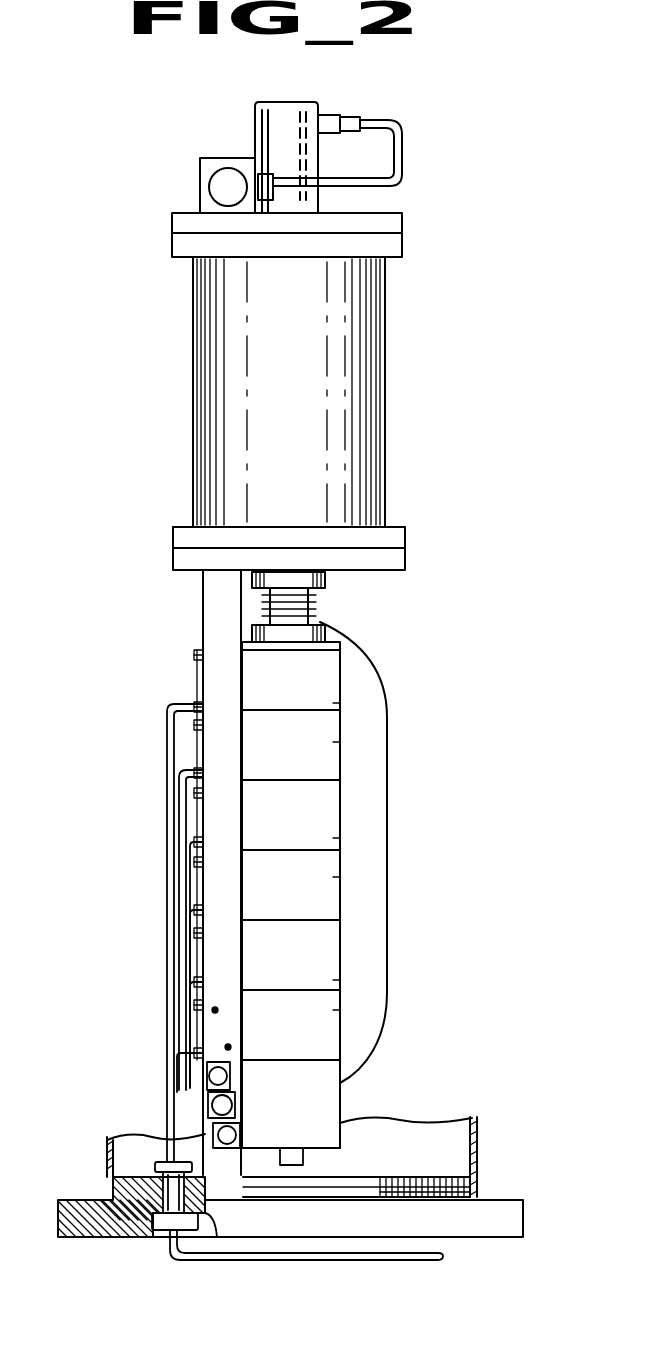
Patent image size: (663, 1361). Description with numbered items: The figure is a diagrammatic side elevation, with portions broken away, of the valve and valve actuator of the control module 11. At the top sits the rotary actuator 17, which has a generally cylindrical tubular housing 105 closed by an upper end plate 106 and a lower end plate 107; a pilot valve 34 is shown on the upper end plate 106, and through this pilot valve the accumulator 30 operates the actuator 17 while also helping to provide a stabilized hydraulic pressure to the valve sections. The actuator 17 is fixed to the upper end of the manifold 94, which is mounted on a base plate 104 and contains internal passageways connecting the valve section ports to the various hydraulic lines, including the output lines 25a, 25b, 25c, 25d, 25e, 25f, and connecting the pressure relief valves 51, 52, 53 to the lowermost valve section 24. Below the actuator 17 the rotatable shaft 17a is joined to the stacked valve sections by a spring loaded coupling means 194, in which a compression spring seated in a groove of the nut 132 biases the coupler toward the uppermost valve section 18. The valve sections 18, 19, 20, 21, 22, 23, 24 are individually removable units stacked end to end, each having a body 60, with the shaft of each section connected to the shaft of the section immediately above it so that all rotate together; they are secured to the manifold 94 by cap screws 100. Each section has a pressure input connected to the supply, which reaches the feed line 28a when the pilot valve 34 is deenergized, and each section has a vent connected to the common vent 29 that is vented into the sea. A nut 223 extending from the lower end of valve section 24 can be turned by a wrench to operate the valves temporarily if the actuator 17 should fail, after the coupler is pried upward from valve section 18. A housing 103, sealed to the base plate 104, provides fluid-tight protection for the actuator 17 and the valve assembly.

The pilot valve 34 is at (212, 182).
The upper end plate 106 is at (403, 225).
The rotary actuator 17 is at (392, 322).
The tubular housing 105 is at (386, 383).
The lower end plate 107 is at (173, 553).
The nut 132 is at (326, 581).
The rotatable shaft 17a is at (310, 601).
The spring loaded coupling means 194 is at (328, 623).
The manifold 94 is at (203, 610).
The cap screws 100 is at (196, 1006).
The output line 25a is at (167, 742).
The output line 25b is at (167, 808).
The output line 25c is at (167, 888).
The output line 25d is at (167, 955).
The output line 25e is at (167, 1032).
The output line 25f is at (167, 1080).
The body 60 is at (333, 1010).
The accumulator 30 is at (390, 795).
The valve section 18 is at (303, 695).
The valve section 19 is at (303, 763).
The valve section 20 is at (303, 835).
The valve section 21 is at (303, 903).
The valve section 22 is at (303, 971).
The valve section 23 is at (303, 1041).
The valve section 24 is at (303, 1117).
The feed line 28a is at (218, 1008).
The vent 29 is at (226, 1052).
The pressure relief valve 51 is at (231, 1072).
The pressure relief valve 52 is at (208, 1107).
The pressure relief valve 53 is at (241, 1132).
The nut 223 is at (304, 1160).
The housing 103 is at (478, 1117).
The control module 11 is at (488, 1146).
The base plate 104 is at (523, 1210).